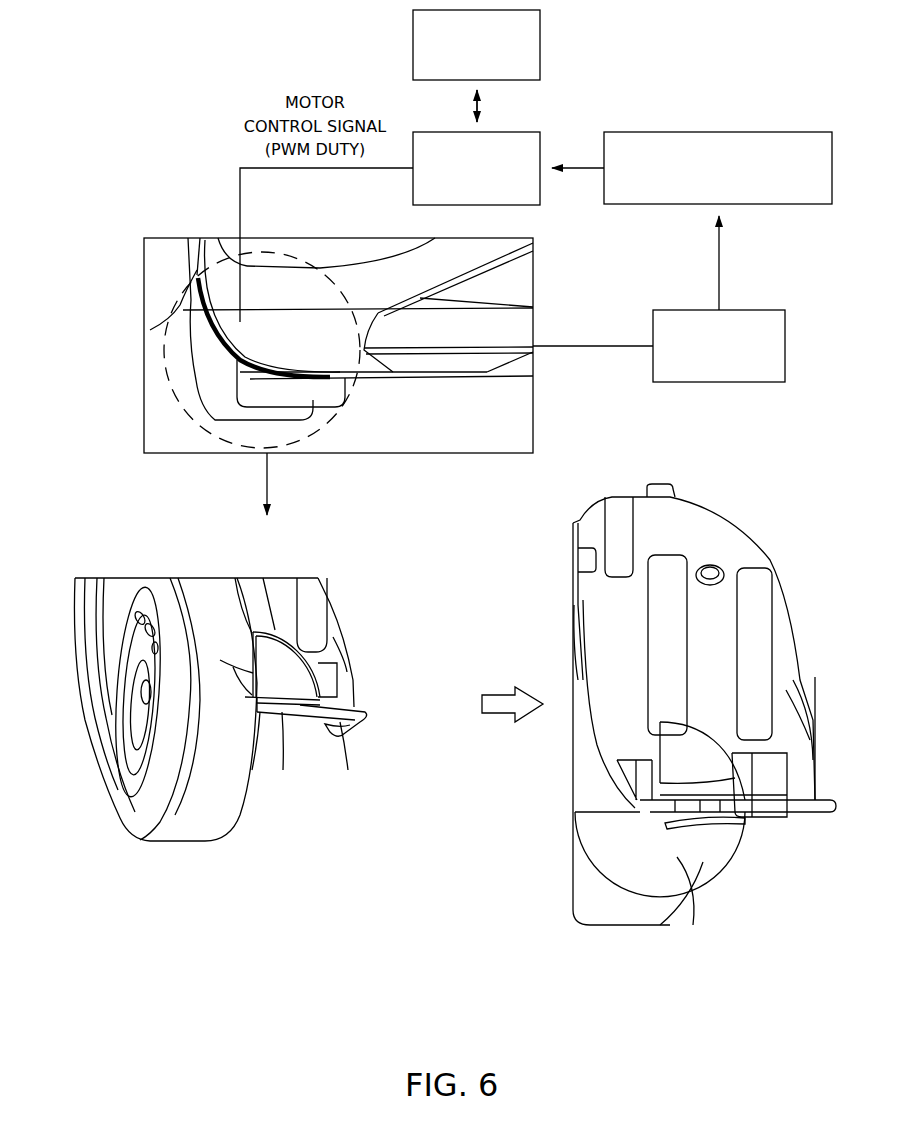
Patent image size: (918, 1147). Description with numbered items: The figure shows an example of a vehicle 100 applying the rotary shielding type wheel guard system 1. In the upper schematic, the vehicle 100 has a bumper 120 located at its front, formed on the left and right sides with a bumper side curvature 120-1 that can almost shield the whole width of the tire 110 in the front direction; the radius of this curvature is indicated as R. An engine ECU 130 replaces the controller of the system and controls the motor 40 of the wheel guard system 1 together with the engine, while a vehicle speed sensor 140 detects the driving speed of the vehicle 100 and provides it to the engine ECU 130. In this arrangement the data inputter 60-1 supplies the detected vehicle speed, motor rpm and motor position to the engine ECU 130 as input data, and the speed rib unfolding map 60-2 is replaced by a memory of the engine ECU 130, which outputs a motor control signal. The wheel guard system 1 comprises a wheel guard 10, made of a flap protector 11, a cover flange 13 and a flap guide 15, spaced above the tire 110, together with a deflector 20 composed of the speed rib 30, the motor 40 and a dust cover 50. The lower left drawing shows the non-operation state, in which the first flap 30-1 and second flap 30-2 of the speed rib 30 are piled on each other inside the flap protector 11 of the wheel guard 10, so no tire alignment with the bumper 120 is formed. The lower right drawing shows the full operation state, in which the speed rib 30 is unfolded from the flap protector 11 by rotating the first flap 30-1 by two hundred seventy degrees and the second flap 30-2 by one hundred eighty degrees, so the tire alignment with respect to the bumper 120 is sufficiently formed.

The rotary shielding type wheel guard system 1 is at (113, 550).
The wheel guard 10 is at (313, 585).
The flap protector 11 is at (287, 633).
The cover flange 13 is at (345, 737).
The flap guide 15 is at (370, 709).
The deflector 20 is at (355, 812).
The speed rib 30 is at (342, 382).
The first flap 30-1 is at (625, 905).
The second flap 30-2 is at (690, 900).
The motor 40 is at (262, 703).
The dust cover 50 is at (322, 735).
The data inputter 60-1 is at (706, 132).
The speed rib unfolding map 60-2 is at (540, 40).
The vehicle 100 is at (158, 198).
The tire 110 is at (213, 392).
The bumper 120 is at (520, 337).
The bumper side curvature 120-1 is at (150, 330).
The engine electronic control unit (ECU) 130 is at (535, 132).
The vehicle speed sensor 140 is at (748, 310).
The radius of curvature R is at (240, 348).